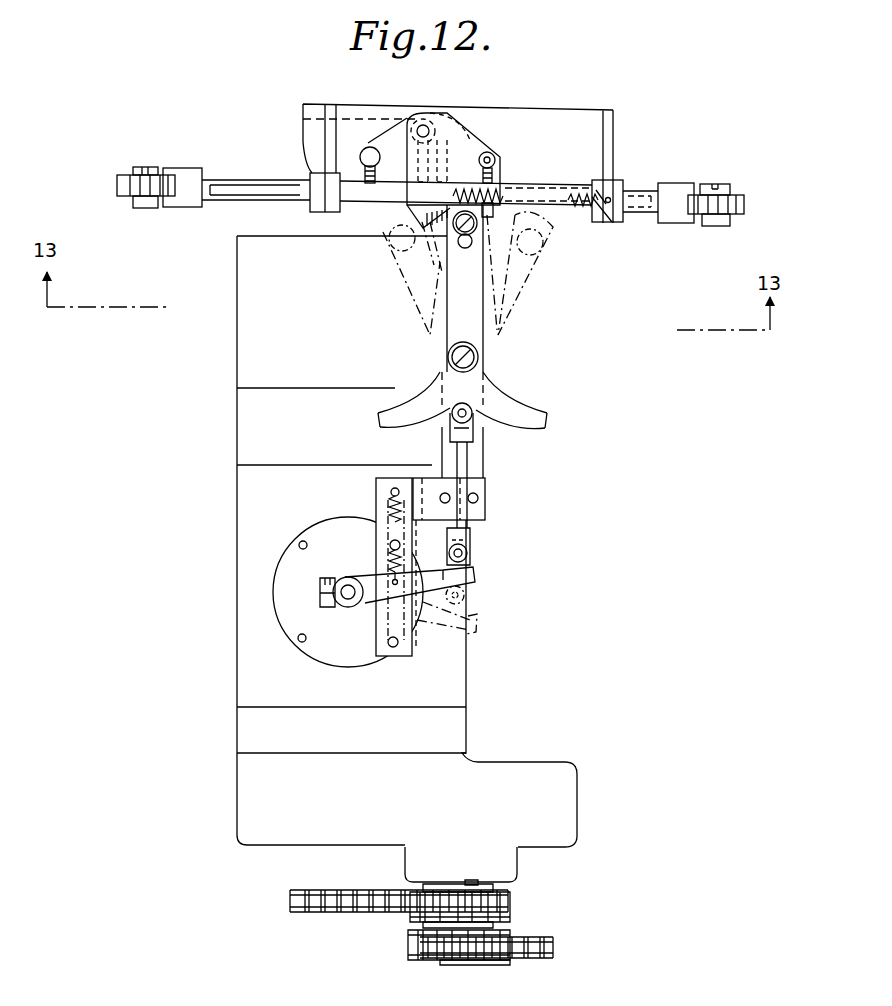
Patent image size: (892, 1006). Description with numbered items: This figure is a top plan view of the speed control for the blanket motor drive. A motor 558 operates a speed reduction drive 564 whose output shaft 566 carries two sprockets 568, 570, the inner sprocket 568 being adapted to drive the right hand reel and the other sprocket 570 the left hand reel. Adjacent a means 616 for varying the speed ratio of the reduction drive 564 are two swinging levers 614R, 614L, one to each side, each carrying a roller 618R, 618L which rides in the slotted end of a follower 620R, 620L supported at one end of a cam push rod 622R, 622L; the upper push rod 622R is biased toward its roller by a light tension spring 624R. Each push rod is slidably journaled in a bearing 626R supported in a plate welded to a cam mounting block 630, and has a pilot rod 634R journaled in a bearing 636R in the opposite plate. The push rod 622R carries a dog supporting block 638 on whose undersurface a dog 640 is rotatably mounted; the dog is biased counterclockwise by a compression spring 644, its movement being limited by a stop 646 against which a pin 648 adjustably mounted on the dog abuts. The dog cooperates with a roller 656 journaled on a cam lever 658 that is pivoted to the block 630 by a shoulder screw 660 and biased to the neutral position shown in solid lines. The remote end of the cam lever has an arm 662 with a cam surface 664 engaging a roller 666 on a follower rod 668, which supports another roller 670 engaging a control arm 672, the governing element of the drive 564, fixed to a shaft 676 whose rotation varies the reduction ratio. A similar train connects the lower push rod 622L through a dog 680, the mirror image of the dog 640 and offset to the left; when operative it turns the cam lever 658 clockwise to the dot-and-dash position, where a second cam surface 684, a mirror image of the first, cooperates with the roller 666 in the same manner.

The motor 558 is at (248, 323).
The speed reduction drive 564 is at (237, 595).
The output shaft 566 is at (477, 883).
The inner sprocket 568 is at (510, 912).
The sprocket 570 is at (437, 953).
The swinging lever 614L is at (155, 209).
The swinging lever 614R is at (713, 226).
The speed varying means 616 is at (530, 310).
The roller 618L is at (125, 182).
The roller 618R is at (742, 196).
The follower 620L is at (185, 168).
The follower 620R is at (672, 189).
The cam push rod 622L is at (267, 177).
The cam push rod 622R is at (563, 193).
The tension spring 624R is at (612, 222).
The bearing 626R is at (620, 180).
The cam mounting block 630 is at (528, 110).
The pilot rod 634R is at (265, 203).
The bearing 636R is at (347, 170).
The dog supporting block 638 is at (470, 137).
The dog 640 is at (447, 207).
The compression spring 644 is at (397, 143).
The stop 646 is at (492, 153).
The pin 648 is at (483, 237).
The roller 656 is at (483, 265).
The cam lever 658 is at (457, 300).
The shoulder screw 660 is at (450, 352).
The arm 662 is at (400, 402).
The cam surface 664 is at (405, 428).
The roller 666 is at (477, 420).
The follower rod 668 is at (460, 467).
The roller 670 is at (477, 557).
The control arm 672 is at (367, 608).
The shaft 676 is at (347, 605).
The dog 680 is at (438, 245).
The second cam surface 684 is at (525, 435).